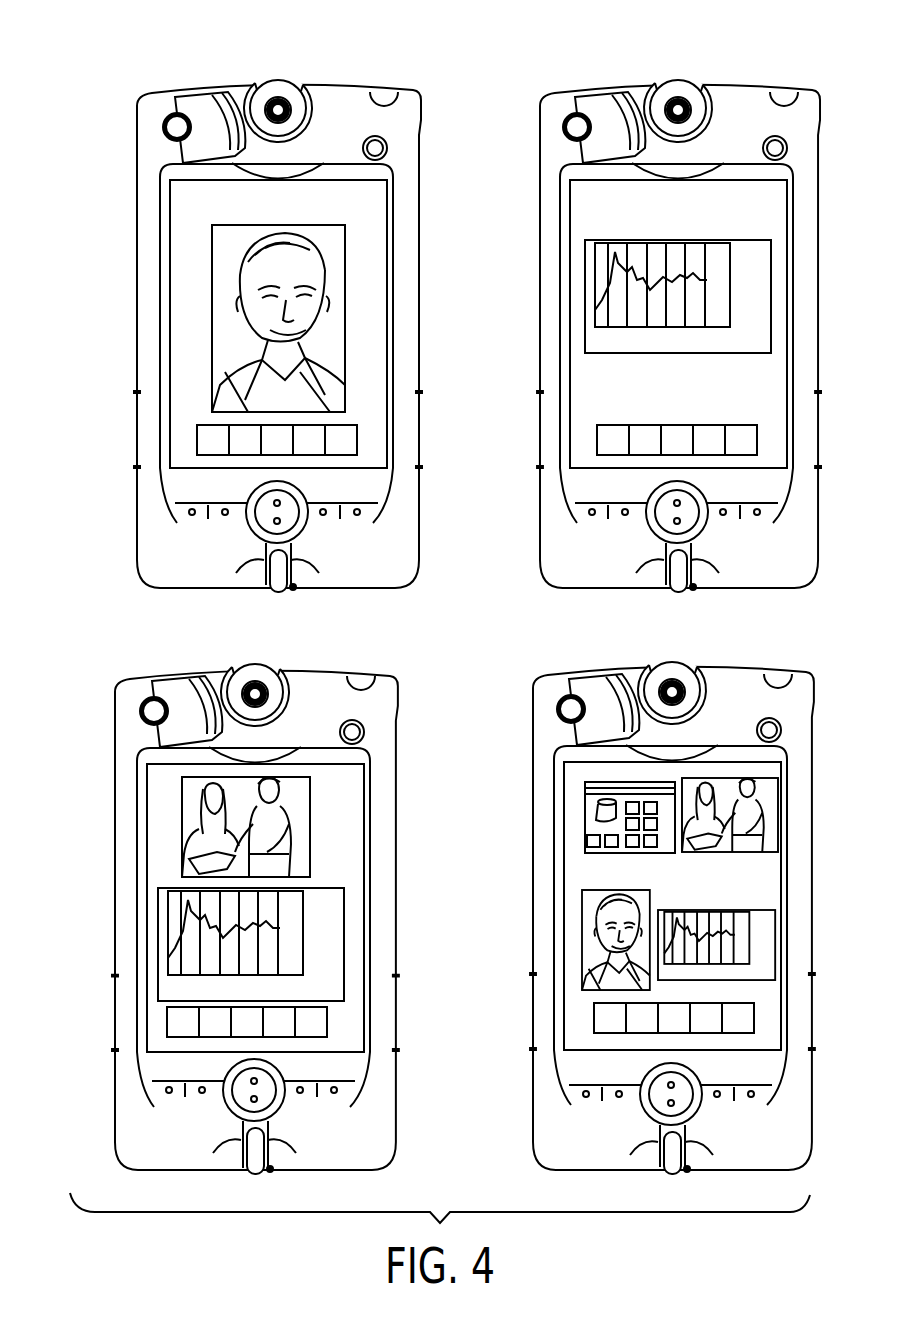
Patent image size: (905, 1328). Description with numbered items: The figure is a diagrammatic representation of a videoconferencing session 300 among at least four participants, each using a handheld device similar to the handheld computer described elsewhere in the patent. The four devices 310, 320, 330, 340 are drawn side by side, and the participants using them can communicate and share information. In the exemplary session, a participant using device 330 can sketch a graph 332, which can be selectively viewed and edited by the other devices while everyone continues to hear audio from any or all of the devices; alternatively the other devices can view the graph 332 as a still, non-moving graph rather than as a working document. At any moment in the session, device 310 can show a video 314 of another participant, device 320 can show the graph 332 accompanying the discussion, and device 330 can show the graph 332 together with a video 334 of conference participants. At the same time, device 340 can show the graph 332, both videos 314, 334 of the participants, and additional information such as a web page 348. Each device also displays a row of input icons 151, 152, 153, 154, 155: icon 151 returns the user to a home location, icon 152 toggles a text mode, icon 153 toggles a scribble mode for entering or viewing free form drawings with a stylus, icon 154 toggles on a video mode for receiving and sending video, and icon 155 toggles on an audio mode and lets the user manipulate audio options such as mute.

The videoconferencing session 300 is at (286, 308).
The device 310 is at (410, 167).
The device 320 is at (545, 128).
The device 330 is at (137, 679).
The device 340 is at (734, 676).
The video 314 is at (338, 257).
The graph 332 is at (588, 240).
The video 334 is at (303, 797).
The web page 348 is at (587, 783).
The input icon 151 is at (205, 430).
The input icon 152 is at (235, 455).
The input icon 153 is at (267, 455).
The input icon 154 is at (302, 455).
The input icon 155 is at (353, 428).